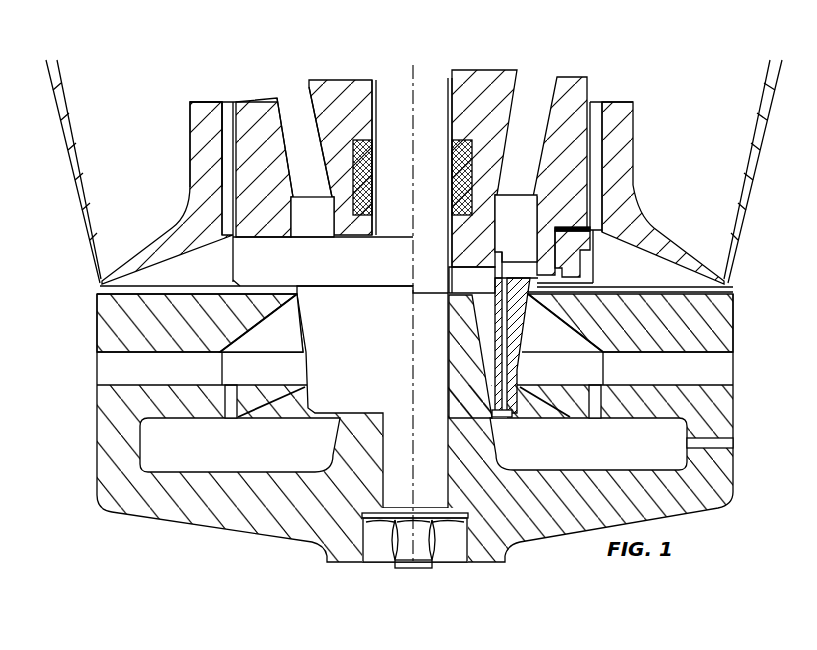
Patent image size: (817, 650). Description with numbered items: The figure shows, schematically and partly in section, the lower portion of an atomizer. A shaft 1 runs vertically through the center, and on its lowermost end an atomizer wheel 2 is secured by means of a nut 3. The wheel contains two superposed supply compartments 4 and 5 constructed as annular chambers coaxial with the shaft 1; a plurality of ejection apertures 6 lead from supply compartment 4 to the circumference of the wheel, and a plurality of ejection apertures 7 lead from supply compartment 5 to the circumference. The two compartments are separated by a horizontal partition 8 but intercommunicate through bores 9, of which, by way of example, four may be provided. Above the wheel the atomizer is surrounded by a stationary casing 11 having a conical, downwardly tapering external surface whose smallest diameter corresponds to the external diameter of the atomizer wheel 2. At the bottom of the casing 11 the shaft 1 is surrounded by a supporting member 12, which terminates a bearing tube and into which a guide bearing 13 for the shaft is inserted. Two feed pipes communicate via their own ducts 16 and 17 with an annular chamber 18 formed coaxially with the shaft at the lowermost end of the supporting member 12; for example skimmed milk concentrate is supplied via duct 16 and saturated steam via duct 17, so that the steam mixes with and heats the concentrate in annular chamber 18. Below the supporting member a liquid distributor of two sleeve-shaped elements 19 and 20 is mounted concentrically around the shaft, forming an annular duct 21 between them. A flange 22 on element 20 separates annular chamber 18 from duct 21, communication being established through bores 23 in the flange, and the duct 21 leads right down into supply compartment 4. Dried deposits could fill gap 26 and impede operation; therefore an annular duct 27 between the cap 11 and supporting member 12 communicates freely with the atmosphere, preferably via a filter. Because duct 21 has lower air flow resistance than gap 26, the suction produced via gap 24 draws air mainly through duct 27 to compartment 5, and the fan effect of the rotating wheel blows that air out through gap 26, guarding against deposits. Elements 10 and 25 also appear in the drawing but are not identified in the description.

The shaft 1 is at (441, 80).
The atomizer wheel 2 is at (278, 538).
The nut 3 is at (381, 552).
The supply compartment 4 is at (255, 448).
The supply compartment 5 is at (257, 375).
The ejection apertures 6 is at (735, 444).
The ejection apertures 7 is at (100, 370).
The horizontal partition 8 is at (157, 420).
The bores 9 is at (230, 420).
The ring 10 is at (106, 324).
The stationary casing 11 is at (92, 232).
The supporting member 12 is at (248, 150).
The guide bearing 13 is at (373, 178).
The duct 16 is at (288, 96).
The duct 17 is at (548, 78).
The annular chamber 18 is at (306, 230).
The sleeve-shaped element 19 is at (568, 281).
The sleeve-shaped element 20 is at (497, 288).
The annular duct 21 is at (519, 333).
The flange 22 is at (522, 268).
The bores 23 is at (503, 252).
The gap 24 is at (296, 298).
The gap 25 is at (261, 323).
The gap 26 is at (100, 292).
The annular duct 27 is at (230, 121).